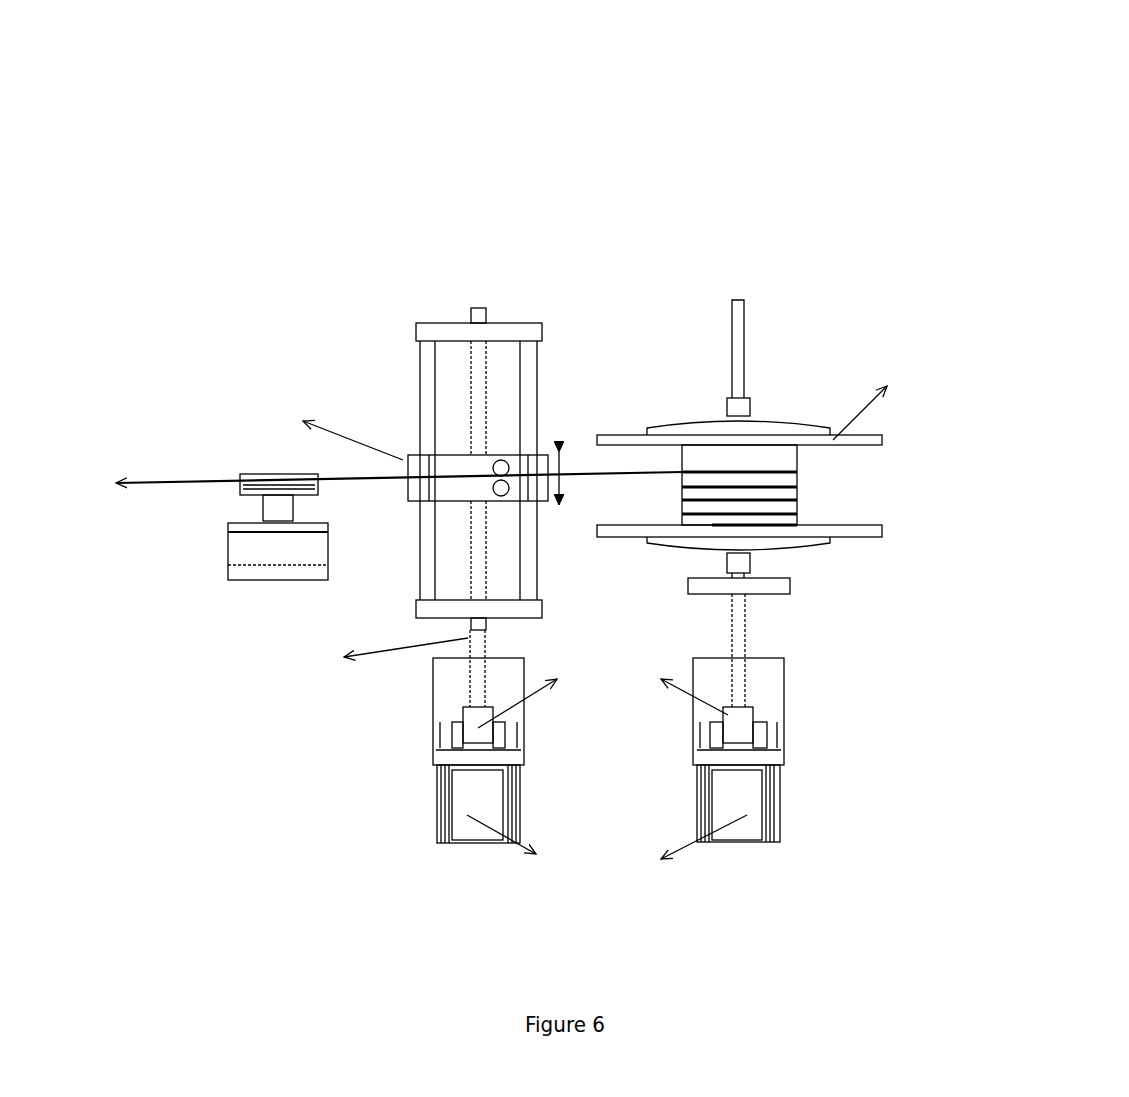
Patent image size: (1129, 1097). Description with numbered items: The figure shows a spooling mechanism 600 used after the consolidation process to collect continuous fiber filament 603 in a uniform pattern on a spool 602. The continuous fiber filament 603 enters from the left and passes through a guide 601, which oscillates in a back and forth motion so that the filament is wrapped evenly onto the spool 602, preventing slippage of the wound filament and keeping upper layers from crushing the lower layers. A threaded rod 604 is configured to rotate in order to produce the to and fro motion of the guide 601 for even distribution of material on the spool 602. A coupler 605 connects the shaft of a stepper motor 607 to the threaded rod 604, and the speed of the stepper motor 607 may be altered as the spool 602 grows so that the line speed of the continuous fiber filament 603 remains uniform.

The spooling mechanism 600 is at (702, 88).
The guide 601 is at (380, 503).
The spool 602 is at (769, 490).
The continuous fiber filament 603 is at (352, 439).
The threaded rod 604 is at (278, 550).
The coupler 605 is at (608, 680).
The stepper motor 607 is at (608, 775).